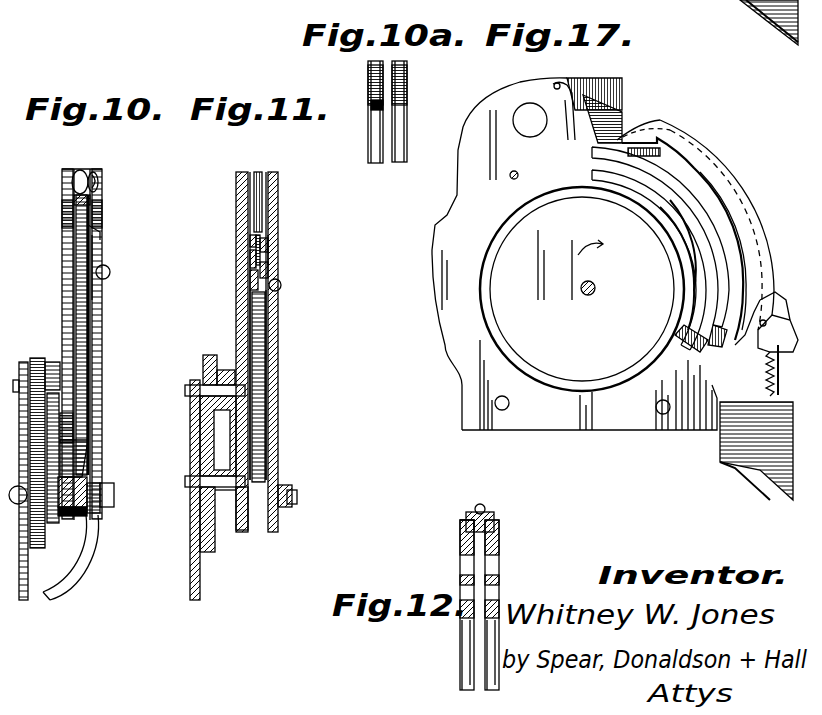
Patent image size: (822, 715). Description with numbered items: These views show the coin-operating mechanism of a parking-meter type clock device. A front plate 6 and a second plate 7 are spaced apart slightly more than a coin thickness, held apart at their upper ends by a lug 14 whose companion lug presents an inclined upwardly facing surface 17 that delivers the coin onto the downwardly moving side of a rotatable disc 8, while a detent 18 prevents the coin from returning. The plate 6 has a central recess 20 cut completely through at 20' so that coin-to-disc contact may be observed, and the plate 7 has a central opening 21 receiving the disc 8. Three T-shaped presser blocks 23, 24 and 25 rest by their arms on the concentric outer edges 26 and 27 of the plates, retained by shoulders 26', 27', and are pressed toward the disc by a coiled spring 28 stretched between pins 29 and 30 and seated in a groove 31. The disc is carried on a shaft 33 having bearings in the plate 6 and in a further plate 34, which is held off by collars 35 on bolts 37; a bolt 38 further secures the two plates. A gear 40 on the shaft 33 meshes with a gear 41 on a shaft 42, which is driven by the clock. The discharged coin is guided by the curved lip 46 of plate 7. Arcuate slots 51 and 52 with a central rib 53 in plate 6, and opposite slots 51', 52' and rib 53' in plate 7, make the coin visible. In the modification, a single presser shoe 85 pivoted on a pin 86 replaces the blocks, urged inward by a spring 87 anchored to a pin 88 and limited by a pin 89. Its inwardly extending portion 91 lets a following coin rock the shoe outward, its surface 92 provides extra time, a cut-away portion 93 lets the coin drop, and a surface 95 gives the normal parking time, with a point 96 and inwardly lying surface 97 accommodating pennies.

In FIG. 10, the front plate 6 is at (62, 298).
In FIG. 11, the front plate 6 is at (240, 340).
In FIG. 12, the front plate 6 is at (462, 585).
In FIG. 10, the plate 7 is at (102, 326).
In FIG. 11, the plate 7 is at (278, 363).
In FIG. 17, the plate 7 is at (503, 98).
In FIG. 12, the plate 7 is at (499, 548).
In FIG. 11, the rotatable disc 8 is at (278, 330).
In FIG. 17, the rotatable disc 8 is at (508, 321).
In FIG. 10A, the lug 14 is at (371, 116).
In FIG. 11, the upwardly facing surface 17 is at (278, 262).
In FIG. 10, the detent 18 is at (82, 172).
In FIG. 11, the detent 18 is at (258, 172).
In FIG. 17, the detent 18 is at (560, 84).
In FIG. 11, the central recess 20 is at (219, 385).
In FIG. 12, the opening 20' is at (445, 655).
In FIG. 17, the central opening 21 is at (512, 226).
In FIG. 10, the presser block 23 is at (100, 230).
In FIG. 12, the presser block 23 is at (460, 515).
In FIG. 10, the presser block 24 is at (88, 302).
In FIG. 10, the presser block 25 is at (100, 386).
In FIG. 10, the outer edge 26 is at (46, 344).
In FIG. 10A, the outer edge 26 is at (355, 112).
In FIG. 12, the outer edge 26 is at (447, 537).
In FIG. 10, the shoulder 26' is at (47, 213).
In FIG. 10A, the shoulder 26' is at (354, 85).
In FIG. 10, the outer edge 27 is at (121, 265).
In FIG. 10A, the outer edge 27 is at (419, 111).
In FIG. 12, the outer edge 27 is at (516, 535).
In FIG. 10, the shoulder 27' is at (122, 207).
In FIG. 10A, the shoulder 27' is at (421, 85).
In FIG. 10, the coiled spring 28 is at (82, 360).
In FIG. 12, the coiled spring 28 is at (482, 503).
In FIG. 10, the pin 29 is at (102, 192).
In FIG. 10, the pin 30 is at (82, 470).
In FIG. 12, the groove 31 is at (494, 516).
In FIG. 11, the shaft 33 is at (190, 396).
In FIG. 17, the shaft 33 is at (586, 296).
In FIG. 10, the plate 34 is at (24, 362).
In FIG. 11, the plate 34 is at (185, 388).
In FIG. 10, the collar 35 is at (50, 512).
In FIG. 11, the collar 35 is at (224, 515).
In FIG. 10, the bolt 37 is at (114, 498).
In FIG. 11, the bolt 37 is at (292, 496).
In FIG. 10, the bolt 38 is at (113, 265).
In FIG. 11, the bolt 38 is at (280, 290).
In FIG. 10, the gear 40 is at (40, 358).
In FIG. 11, the gear 40 is at (210, 360).
In FIG. 10, the gear 41 is at (60, 440).
In FIG. 11, the gear 41 is at (200, 448).
In FIG. 11, the shaft 42 is at (185, 481).
In FIG. 10, the curved lip 46 is at (80, 570).
In FIG. 17, the curved lip 46 is at (740, 2).
In FIG. 11, the arcuate slot 51 is at (226, 254).
In FIG. 11, the arcuate slot 51' is at (292, 244).
In FIG. 17, the arcuate slot 51' is at (668, 332).
In FIG. 12, the arcuate slot 51' is at (517, 575).
In FIG. 11, the arcuate slot 52 is at (224, 284).
In FIG. 12, the arcuate slot 52 is at (437, 592).
In FIG. 11, the arcuate slot 52' is at (304, 270).
In FIG. 17, the arcuate slot 52' is at (661, 265).
In FIG. 12, the arcuate slot 52' is at (515, 603).
In FIG. 11, the central arcuate rib 53 is at (209, 265).
In FIG. 11, the arcuate rib 53' is at (301, 229).
In FIG. 17, the arcuate rib 53' is at (684, 313).
In FIG. 17, the presser shoe 85 is at (720, 152).
In FIG. 17, the pin 86 is at (600, 100).
In FIG. 17, the spring 87 is at (782, 352).
In FIG. 17, the pin 88 is at (762, 382).
In FIG. 17, the pin 89 is at (790, 288).
In FIG. 17, the inwardly extending portion 91 is at (636, 155).
In FIG. 17, the surface 92 is at (680, 136).
In FIG. 17, the cut-away portion 93 is at (705, 140).
In FIG. 17, the surface 95 is at (712, 200).
In FIG. 17, the point 96 is at (742, 250).
In FIG. 17, the inwardly lying surface 97 is at (770, 290).